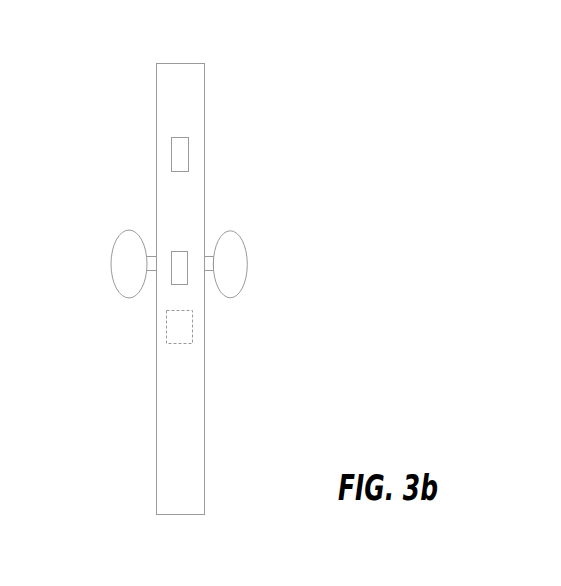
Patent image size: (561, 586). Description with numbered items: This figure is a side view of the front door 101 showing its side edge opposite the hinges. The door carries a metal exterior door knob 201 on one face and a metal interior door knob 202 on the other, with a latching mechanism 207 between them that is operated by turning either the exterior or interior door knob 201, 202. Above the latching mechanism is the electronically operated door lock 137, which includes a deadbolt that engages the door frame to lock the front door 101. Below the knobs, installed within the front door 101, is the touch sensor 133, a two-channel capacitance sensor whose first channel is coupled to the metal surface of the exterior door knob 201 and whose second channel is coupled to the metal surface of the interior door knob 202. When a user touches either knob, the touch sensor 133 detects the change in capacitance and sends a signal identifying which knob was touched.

The front door 101 is at (189, 89).
The electronically operated door lock 137 is at (180, 155).
The latching mechanism 207 is at (180, 260).
The exterior door knob 201 is at (123, 252).
The interior door knob 202 is at (233, 283).
The touch sensor 133 is at (180, 330).